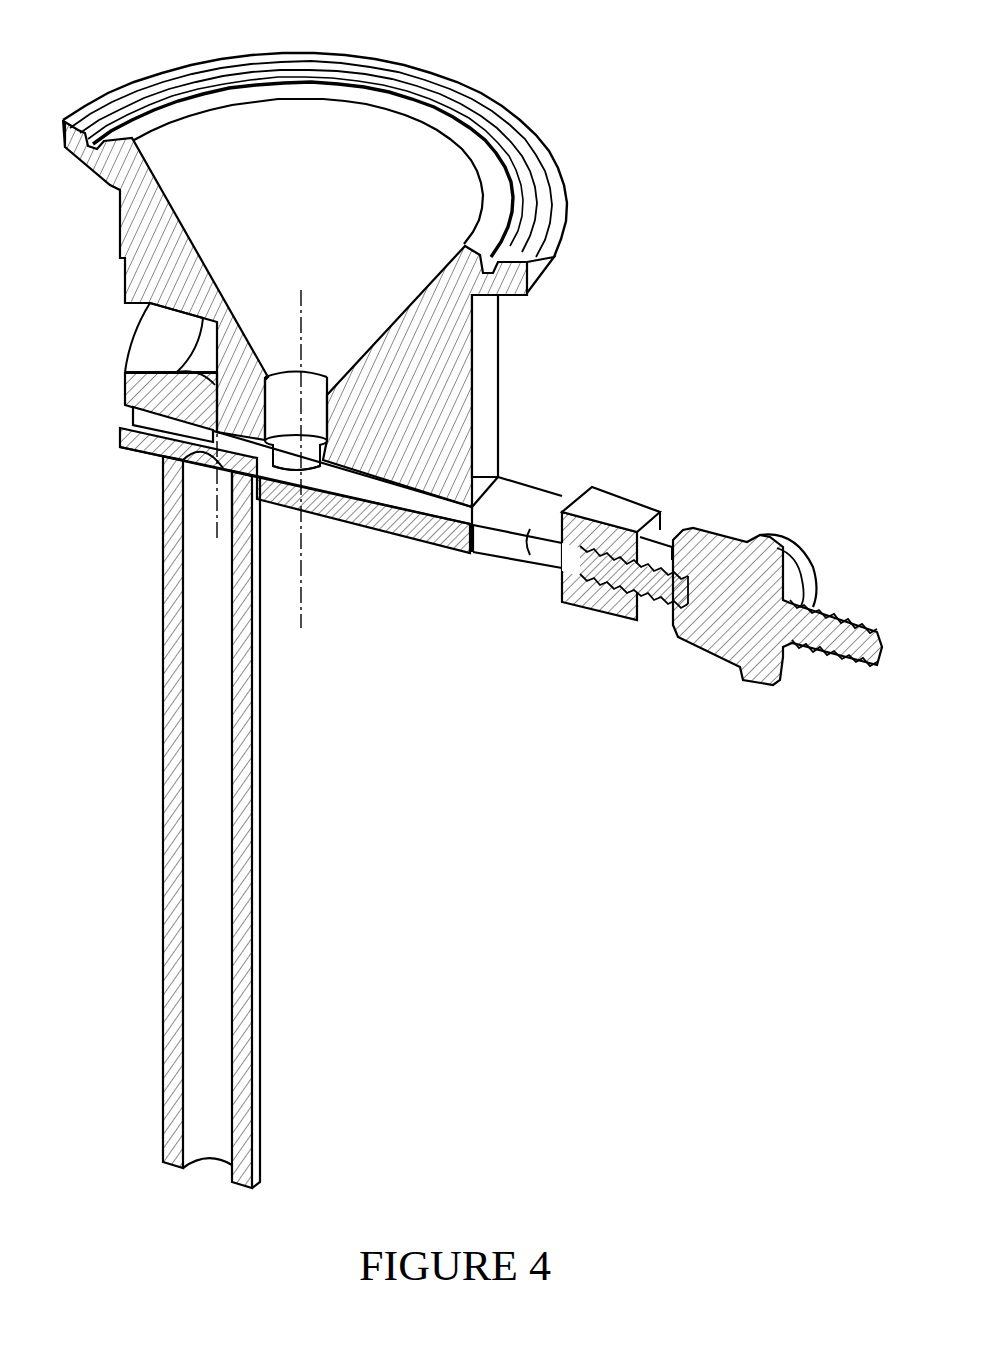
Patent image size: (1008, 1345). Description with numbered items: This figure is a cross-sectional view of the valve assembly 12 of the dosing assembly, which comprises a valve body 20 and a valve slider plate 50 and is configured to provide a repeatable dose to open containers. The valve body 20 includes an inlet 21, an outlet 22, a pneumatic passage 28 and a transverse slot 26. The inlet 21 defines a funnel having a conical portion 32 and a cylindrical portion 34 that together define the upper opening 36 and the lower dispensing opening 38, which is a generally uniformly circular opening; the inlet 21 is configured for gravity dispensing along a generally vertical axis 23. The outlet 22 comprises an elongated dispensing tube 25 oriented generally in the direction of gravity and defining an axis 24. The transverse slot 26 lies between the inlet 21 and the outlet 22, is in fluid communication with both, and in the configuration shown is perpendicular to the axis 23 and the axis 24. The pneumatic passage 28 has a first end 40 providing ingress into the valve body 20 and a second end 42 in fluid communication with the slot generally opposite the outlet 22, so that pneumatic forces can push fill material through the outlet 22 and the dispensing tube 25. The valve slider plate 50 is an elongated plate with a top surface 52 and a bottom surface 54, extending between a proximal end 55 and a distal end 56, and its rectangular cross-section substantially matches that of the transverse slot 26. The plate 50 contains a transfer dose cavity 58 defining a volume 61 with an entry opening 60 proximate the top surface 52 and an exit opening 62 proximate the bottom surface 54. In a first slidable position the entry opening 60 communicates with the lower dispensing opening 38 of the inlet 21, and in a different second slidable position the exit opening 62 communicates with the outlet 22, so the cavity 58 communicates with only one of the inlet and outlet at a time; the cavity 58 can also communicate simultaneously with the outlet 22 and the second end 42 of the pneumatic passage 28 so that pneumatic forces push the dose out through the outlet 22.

The valve assembly 12 is at (660, 85).
The valve body 20 is at (562, 168).
The inlet 21 is at (287, 146).
The outlet 22 is at (207, 466).
The axis 23 is at (303, 616).
The axis 24 is at (216, 522).
The elongated dispensing tube 25 is at (258, 895).
The transverse slot 26 is at (520, 501).
The pneumatic passage 28 is at (142, 345).
The conical portion 32 is at (473, 297).
The cylindrical portion 34 is at (340, 405).
The upper opening 36 is at (428, 98).
The lower dispensing opening 38 is at (340, 440).
The first end 40 is at (152, 318).
The second end 42 is at (205, 382).
The valve slider plate 50 is at (497, 551).
The top surface 52 is at (590, 487).
The bottom surface 54 is at (482, 552).
The proximal end 55 is at (545, 574).
The distal end 56 is at (120, 412).
The transfer dose cavity 58 is at (294, 465).
The entry opening 60 is at (335, 470).
The volume 61 is at (232, 530).
The exit opening 62 is at (302, 478).